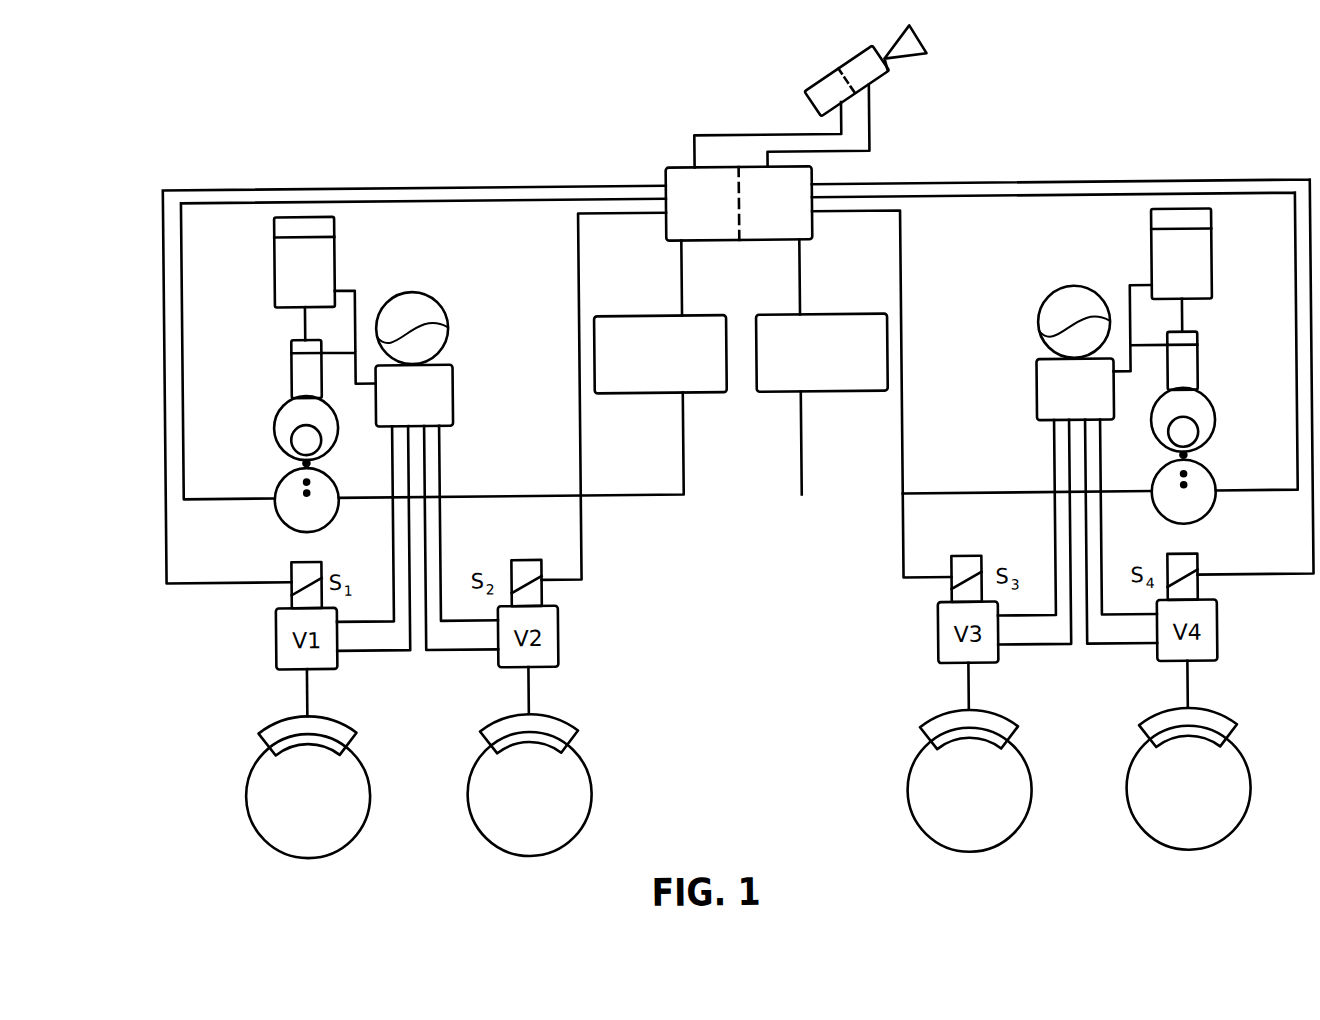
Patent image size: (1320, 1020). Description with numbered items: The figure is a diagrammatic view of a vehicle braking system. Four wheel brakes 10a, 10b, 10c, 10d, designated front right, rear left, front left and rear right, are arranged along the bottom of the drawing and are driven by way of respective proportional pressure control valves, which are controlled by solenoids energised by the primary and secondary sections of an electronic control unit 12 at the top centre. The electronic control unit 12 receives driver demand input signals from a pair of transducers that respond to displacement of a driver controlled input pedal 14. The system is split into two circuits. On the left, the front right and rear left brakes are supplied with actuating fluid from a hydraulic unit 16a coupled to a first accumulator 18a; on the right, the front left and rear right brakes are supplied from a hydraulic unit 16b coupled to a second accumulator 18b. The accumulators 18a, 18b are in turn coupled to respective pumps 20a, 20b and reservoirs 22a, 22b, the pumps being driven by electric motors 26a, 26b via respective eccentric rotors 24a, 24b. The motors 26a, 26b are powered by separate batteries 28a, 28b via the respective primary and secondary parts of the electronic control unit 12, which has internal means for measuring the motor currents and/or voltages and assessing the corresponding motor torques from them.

The wheel brake 10a is at (243, 797).
The wheel brake 10b is at (465, 797).
The wheel brake 10c is at (905, 797).
The wheel brake 10d is at (1124, 797).
The electronic control unit 12 is at (721, 240).
The driver controlled input pedal 14 is at (908, 58).
The hydraulic unit 16a is at (454, 410).
The hydraulic unit 16b is at (1038, 406).
The first accumulator 18a is at (450, 337).
The second accumulator 18b is at (1042, 337).
The pump 20a is at (293, 378).
The pump 20b is at (1199, 370).
The reservoir 22a is at (279, 272).
The reservoir 22b is at (1214, 265).
The eccentric rotor 24a is at (279, 436).
The eccentric rotor 24b is at (1216, 428).
The electric motor 26a is at (286, 523).
The electric motor 26b is at (1208, 515).
The battery 28a is at (658, 392).
The battery 28b is at (828, 392).